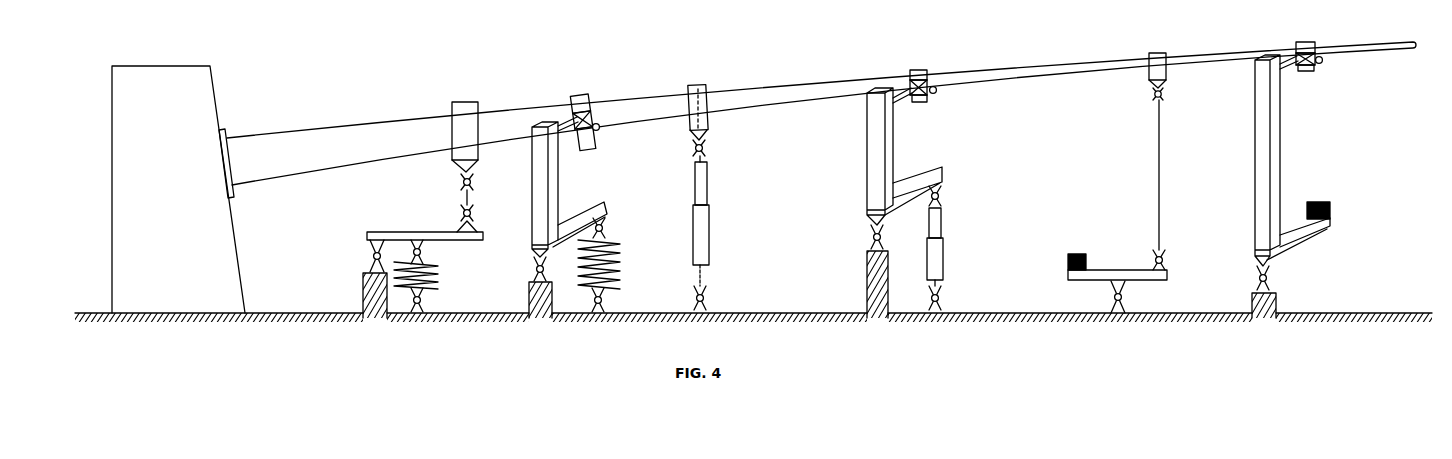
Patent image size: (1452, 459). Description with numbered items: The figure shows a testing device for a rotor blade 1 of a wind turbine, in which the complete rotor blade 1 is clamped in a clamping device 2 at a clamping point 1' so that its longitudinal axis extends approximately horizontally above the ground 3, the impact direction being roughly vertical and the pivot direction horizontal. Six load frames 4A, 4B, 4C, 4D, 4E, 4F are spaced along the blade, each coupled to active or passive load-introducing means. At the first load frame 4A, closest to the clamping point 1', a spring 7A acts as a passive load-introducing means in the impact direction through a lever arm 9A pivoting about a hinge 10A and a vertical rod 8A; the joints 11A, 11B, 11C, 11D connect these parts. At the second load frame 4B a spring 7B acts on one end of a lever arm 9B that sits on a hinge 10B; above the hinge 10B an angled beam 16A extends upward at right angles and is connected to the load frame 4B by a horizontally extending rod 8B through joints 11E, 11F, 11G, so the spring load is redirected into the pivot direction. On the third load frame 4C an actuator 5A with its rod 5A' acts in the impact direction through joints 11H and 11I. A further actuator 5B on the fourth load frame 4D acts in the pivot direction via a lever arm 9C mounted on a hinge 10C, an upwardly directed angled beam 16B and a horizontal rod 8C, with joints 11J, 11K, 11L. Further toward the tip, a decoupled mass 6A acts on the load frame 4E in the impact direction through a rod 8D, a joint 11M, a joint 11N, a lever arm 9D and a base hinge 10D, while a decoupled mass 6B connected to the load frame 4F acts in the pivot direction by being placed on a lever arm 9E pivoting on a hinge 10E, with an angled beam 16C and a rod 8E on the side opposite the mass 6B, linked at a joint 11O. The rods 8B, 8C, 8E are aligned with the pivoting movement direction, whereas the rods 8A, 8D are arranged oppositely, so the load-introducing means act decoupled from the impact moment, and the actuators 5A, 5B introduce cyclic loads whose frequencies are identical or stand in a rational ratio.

The rotor blade 1 is at (821, 113).
The clamping point 1' is at (234, 154).
The clamping device 2 is at (112, 104).
The ground 3 is at (322, 312).
The first load frame 4A is at (455, 103).
The second load frame 4B is at (574, 95).
The third load frame 4C is at (689, 86).
The fourth load frame 4D is at (912, 70).
The load frame 4E is at (1167, 86).
The load frame 4F is at (1299, 42).
The actuator 5A is at (716, 221).
The damper rod 5A' is at (721, 99).
The further actuator 5B is at (944, 248).
The decoupled mass 6A is at (1070, 254).
The decoupled mass 6B is at (1331, 203).
The spring 7A is at (441, 278).
The spring 7B is at (616, 263).
The vertical rod 8A is at (470, 197).
The horizontally extending rod 8B is at (577, 140).
The horizontal rod 8C is at (906, 100).
The rod 8D is at (1162, 210).
The rod 8E is at (1290, 70).
The lever arm 9A is at (476, 239).
The lever arm 9B is at (594, 208).
The lever arm 9C is at (928, 176).
The platform 9D is at (1170, 278).
The arm 9E is at (1302, 240).
The hinge 10A is at (370, 257).
The hinge 10B is at (533, 268).
The hinge 10C is at (871, 236).
The base joint 10D is at (1126, 298).
The base joint 10E is at (1270, 279).
The joint 11A is at (459, 182).
The joint 11B is at (459, 213).
The joint 11C is at (424, 253).
The joint 11D is at (426, 298).
The joint 11E is at (598, 131).
The joint 11F is at (606, 229).
The joint 11G is at (605, 298).
The joint 11H is at (692, 151).
The joint 11I is at (694, 296).
The joint 11J is at (936, 95).
The joint 11K is at (941, 199).
The joint 11L is at (942, 299).
The joint 11M is at (1153, 98).
The joint 11N is at (1154, 256).
The joint 11O is at (1322, 64).
The angled beam 16A is at (531, 173).
The angled beam 16B is at (866, 160).
The angled beam 16C is at (1254, 160).